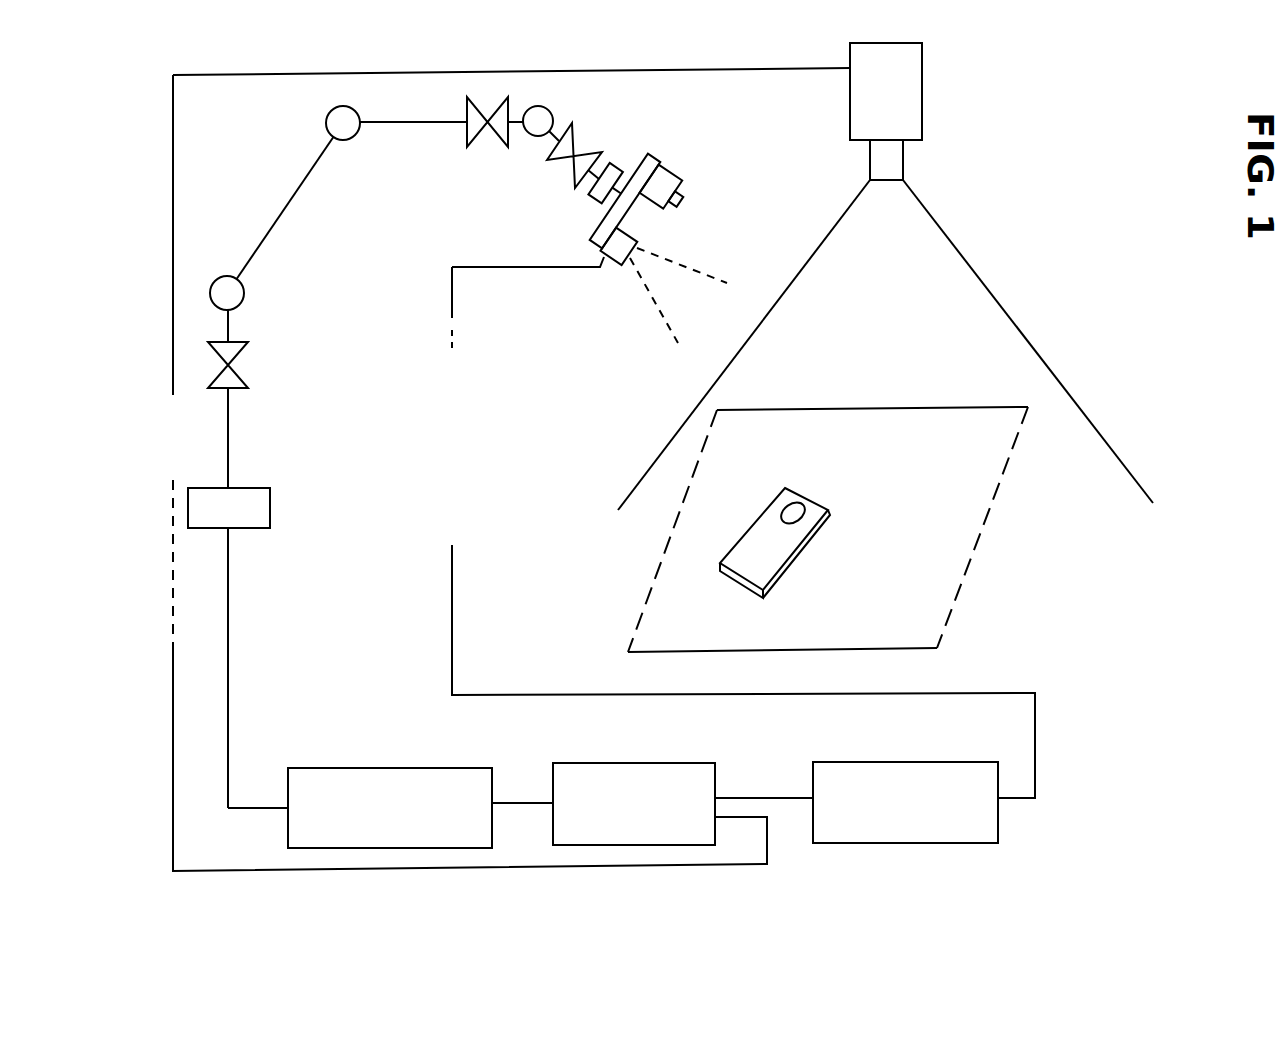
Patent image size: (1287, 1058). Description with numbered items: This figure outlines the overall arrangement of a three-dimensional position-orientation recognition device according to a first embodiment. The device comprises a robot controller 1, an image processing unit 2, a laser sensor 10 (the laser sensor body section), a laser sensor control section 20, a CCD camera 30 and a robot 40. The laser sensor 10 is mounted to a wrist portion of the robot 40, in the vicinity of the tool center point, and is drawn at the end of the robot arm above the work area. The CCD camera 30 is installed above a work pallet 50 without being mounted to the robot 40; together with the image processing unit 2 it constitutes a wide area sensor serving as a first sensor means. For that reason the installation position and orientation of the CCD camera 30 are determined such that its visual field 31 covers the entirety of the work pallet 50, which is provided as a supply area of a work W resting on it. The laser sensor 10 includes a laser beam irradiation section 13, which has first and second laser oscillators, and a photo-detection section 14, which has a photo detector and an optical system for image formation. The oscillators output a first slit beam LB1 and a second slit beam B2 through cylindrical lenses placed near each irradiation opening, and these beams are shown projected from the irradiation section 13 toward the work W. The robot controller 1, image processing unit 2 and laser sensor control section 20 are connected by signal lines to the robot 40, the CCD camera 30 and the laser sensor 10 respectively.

The robot controller 1 is at (373, 767).
The image processing unit 2 is at (640, 762).
The laser sensor 10 is at (572, 235).
The laser beam irradiation section 13 is at (633, 282).
The photo-detection section 14 is at (704, 178).
The laser sensor control section 20 is at (900, 761).
The CCD camera 30 is at (936, 127).
The visual field 31 is at (950, 238).
The robot 40 is at (262, 415).
The work pallet 50 is at (995, 560).
The work W is at (797, 558).
The second slit beam B2 is at (691, 261).
The first slit beam LB1 is at (654, 319).